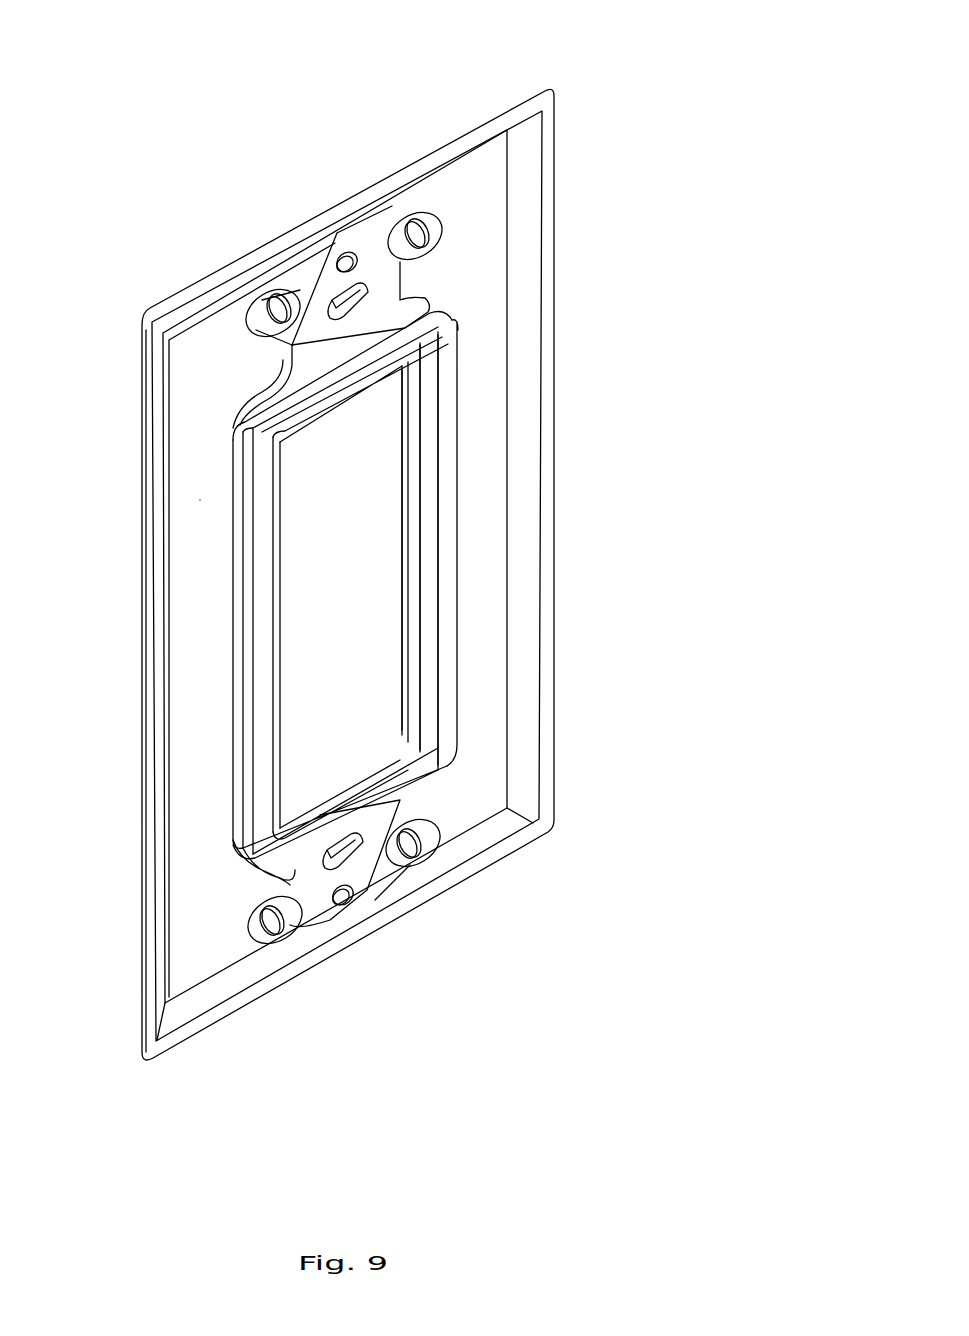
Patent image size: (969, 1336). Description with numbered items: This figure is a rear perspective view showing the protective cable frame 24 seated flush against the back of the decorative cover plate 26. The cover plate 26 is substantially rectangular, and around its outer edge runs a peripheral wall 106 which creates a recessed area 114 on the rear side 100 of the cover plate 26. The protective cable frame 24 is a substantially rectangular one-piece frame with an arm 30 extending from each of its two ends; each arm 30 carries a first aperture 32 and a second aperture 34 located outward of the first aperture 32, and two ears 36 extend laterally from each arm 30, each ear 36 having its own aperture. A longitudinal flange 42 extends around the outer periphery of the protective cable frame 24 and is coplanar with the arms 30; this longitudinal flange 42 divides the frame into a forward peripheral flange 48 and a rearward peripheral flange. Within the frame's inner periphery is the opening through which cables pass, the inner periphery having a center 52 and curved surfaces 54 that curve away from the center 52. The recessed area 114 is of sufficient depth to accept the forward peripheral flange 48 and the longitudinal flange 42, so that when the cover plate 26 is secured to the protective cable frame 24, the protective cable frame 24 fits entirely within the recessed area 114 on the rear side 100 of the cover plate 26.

The cover plate 26 is at (492, 112).
The peripheral wall 106 is at (525, 334).
The recessed area 114 is at (478, 242).
The rear side 100 is at (232, 381).
The longitudinal flange 42 is at (235, 627).
The forward peripheral flange 48 is at (402, 530).
The curved surfaces 54 is at (450, 527).
The center 52 is at (425, 588).
The protective cable frame 24 is at (342, 242).
The arm 30 is at (366, 347).
The ears 36 is at (428, 812).
The first aperture 32 is at (325, 858).
The second aperture 34 is at (346, 902).